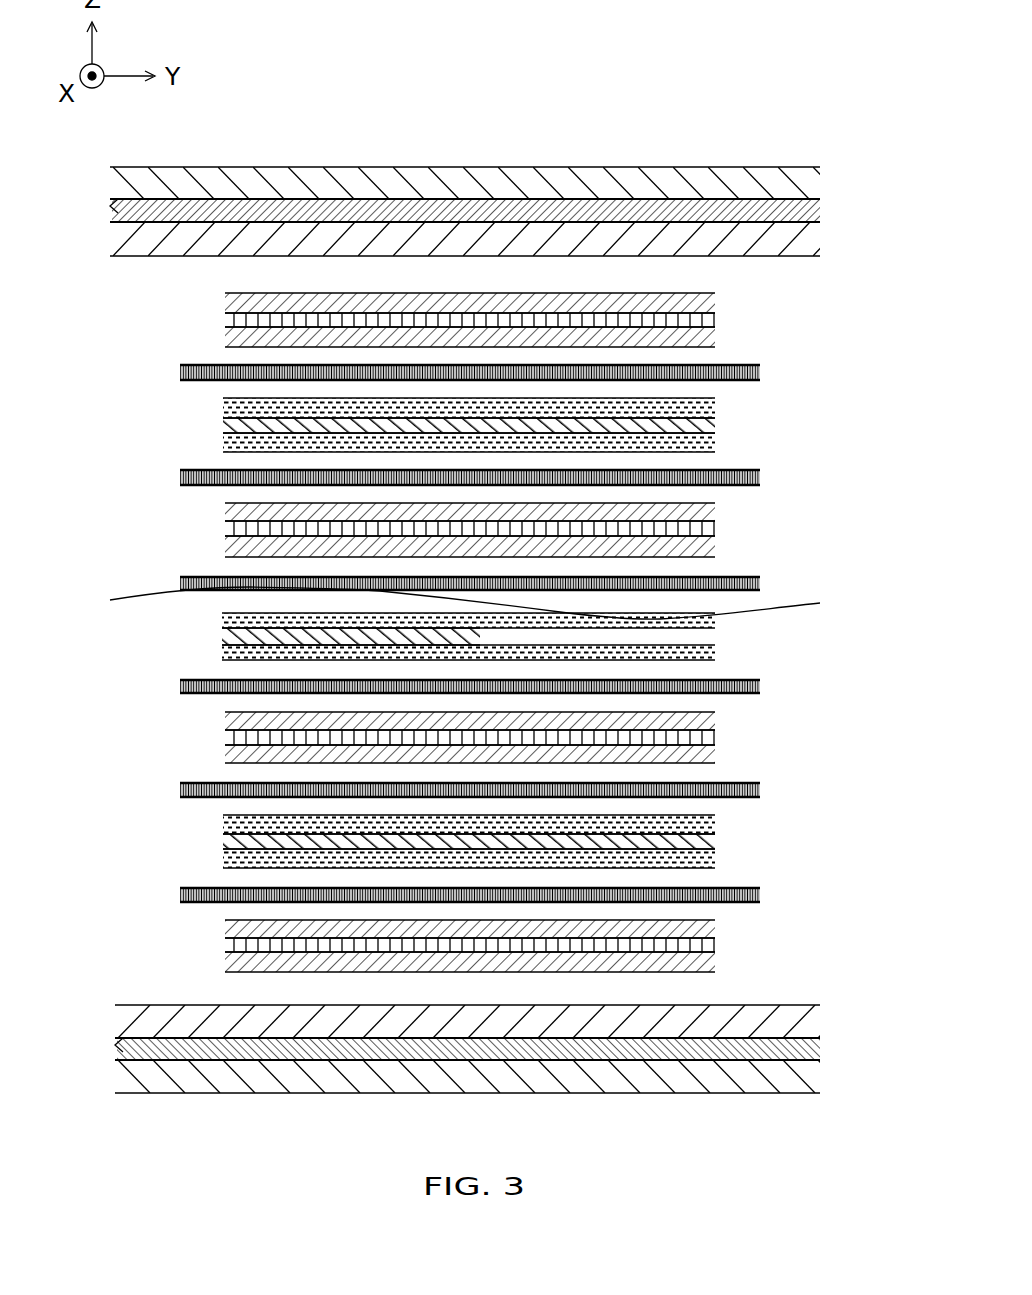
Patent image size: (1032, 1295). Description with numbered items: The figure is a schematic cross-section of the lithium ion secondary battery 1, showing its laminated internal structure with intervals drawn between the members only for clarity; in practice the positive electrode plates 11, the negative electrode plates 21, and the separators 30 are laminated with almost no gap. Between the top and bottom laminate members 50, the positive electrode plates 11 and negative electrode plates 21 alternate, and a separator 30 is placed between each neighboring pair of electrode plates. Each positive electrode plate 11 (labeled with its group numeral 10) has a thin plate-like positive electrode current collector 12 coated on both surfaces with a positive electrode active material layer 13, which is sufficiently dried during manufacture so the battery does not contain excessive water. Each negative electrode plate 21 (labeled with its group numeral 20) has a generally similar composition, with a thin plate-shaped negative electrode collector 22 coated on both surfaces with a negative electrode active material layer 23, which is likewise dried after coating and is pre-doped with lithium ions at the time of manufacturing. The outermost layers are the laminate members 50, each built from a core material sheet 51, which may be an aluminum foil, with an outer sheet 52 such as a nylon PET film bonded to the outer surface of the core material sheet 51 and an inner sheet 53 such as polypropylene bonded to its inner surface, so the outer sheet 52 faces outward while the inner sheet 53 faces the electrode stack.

The lithium ion secondary battery 1 is at (476, 116).
The first sheet 10 is at (489, 632).
The positive electrode plate 11 is at (489, 632).
The positive electrode current collector 12 is at (232, 426).
The positive electrode active material layer 13 is at (232, 408).
The second sheet 20 is at (495, 633).
The negative electrode plate 21 is at (495, 633).
The negative electrode collector 22 is at (235, 320).
The negative electrode active material layer 23 is at (235, 301).
The separator 30 is at (770, 373).
The laminate member 50 is at (478, 631).
The core material sheet 51 is at (118, 212).
The outer sheet 52 is at (120, 185).
The inner sheet 53 is at (122, 237).